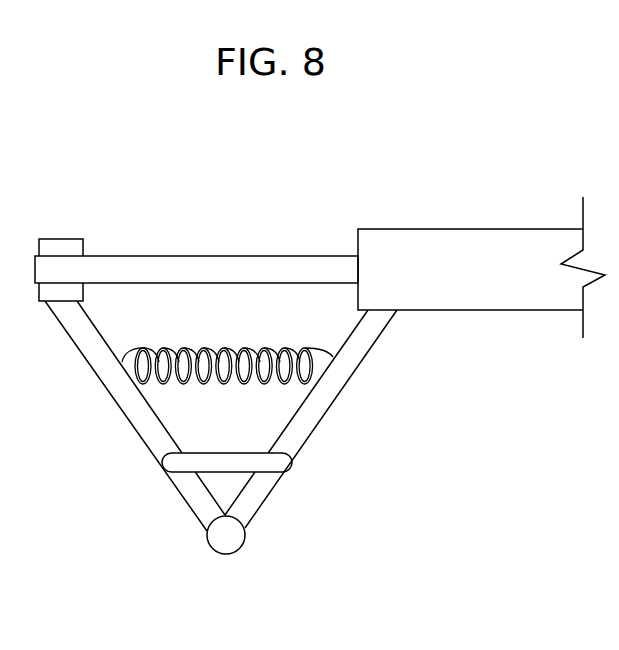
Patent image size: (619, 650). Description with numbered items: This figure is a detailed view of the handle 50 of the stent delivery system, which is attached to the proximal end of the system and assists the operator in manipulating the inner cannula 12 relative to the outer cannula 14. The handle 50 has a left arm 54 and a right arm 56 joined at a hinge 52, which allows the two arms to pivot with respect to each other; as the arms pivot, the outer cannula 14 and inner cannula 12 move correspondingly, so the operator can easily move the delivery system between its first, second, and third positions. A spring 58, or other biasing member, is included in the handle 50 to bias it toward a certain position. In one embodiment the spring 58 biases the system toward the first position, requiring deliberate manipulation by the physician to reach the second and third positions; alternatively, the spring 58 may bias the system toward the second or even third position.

The handle 50 is at (110, 122).
The inner cannula 12 is at (235, 256).
The outer cannula 14 is at (455, 229).
The spring 58 is at (176, 348).
The left arm 54 is at (140, 415).
The right arm 56 is at (313, 410).
The hinge 52 is at (227, 545).